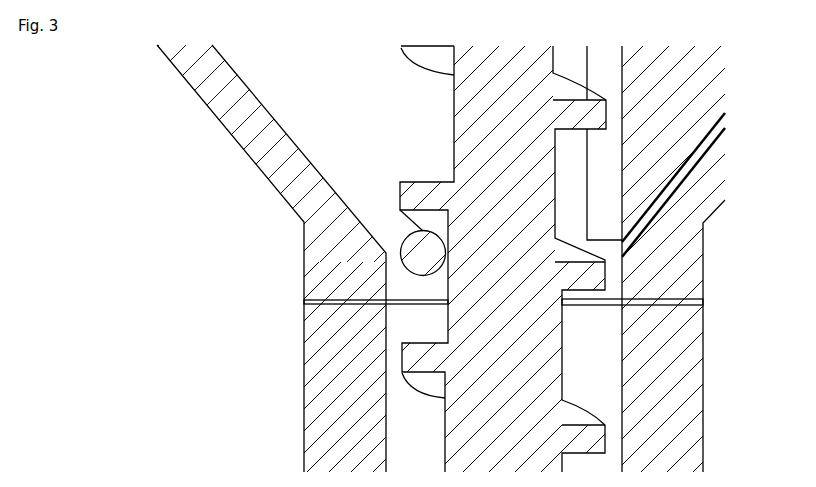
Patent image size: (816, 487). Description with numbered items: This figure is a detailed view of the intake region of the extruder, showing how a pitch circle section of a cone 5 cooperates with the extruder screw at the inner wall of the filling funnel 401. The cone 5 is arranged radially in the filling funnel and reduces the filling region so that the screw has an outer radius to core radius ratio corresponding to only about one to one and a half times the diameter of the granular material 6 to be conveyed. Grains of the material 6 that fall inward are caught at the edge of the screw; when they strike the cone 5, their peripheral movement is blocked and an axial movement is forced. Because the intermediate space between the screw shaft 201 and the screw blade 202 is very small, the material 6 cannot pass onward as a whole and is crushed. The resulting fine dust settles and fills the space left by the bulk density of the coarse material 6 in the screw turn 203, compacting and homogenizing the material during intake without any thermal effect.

The cone 5 is at (656, 259).
The granular material 6 is at (407, 254).
The screw shaft 201 is at (485, 232).
The screw blade 202 is at (420, 352).
The screw turn 203 is at (420, 295).
The inner wall of the filling funnel 401 is at (268, 112).